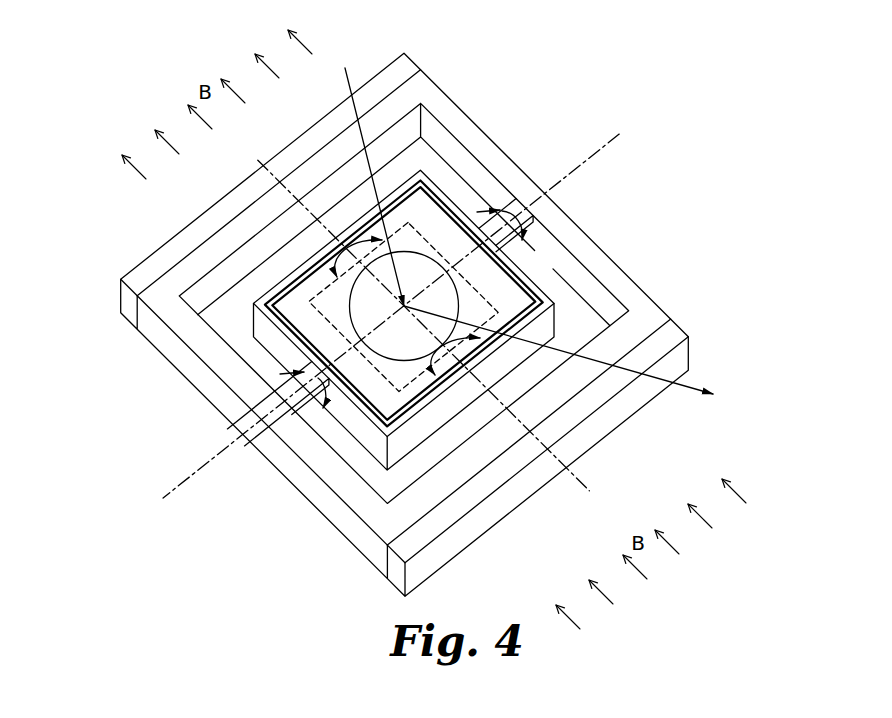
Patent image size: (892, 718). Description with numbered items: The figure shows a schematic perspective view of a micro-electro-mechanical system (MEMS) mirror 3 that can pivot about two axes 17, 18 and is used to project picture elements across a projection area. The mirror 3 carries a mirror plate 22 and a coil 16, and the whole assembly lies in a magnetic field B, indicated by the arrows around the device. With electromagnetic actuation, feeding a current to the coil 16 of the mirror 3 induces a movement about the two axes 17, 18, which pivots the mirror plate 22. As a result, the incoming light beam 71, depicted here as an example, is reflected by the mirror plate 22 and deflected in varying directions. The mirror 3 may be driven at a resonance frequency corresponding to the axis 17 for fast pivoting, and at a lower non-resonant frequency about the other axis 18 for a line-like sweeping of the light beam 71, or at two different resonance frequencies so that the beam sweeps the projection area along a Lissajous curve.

The MEMS mirror 3 is at (672, 145).
The coil 16 is at (308, 340).
The mirror plate 22 is at (450, 299).
The axis 17 is at (590, 488).
The axis 18 is at (186, 480).
The light beam 71 is at (675, 389).